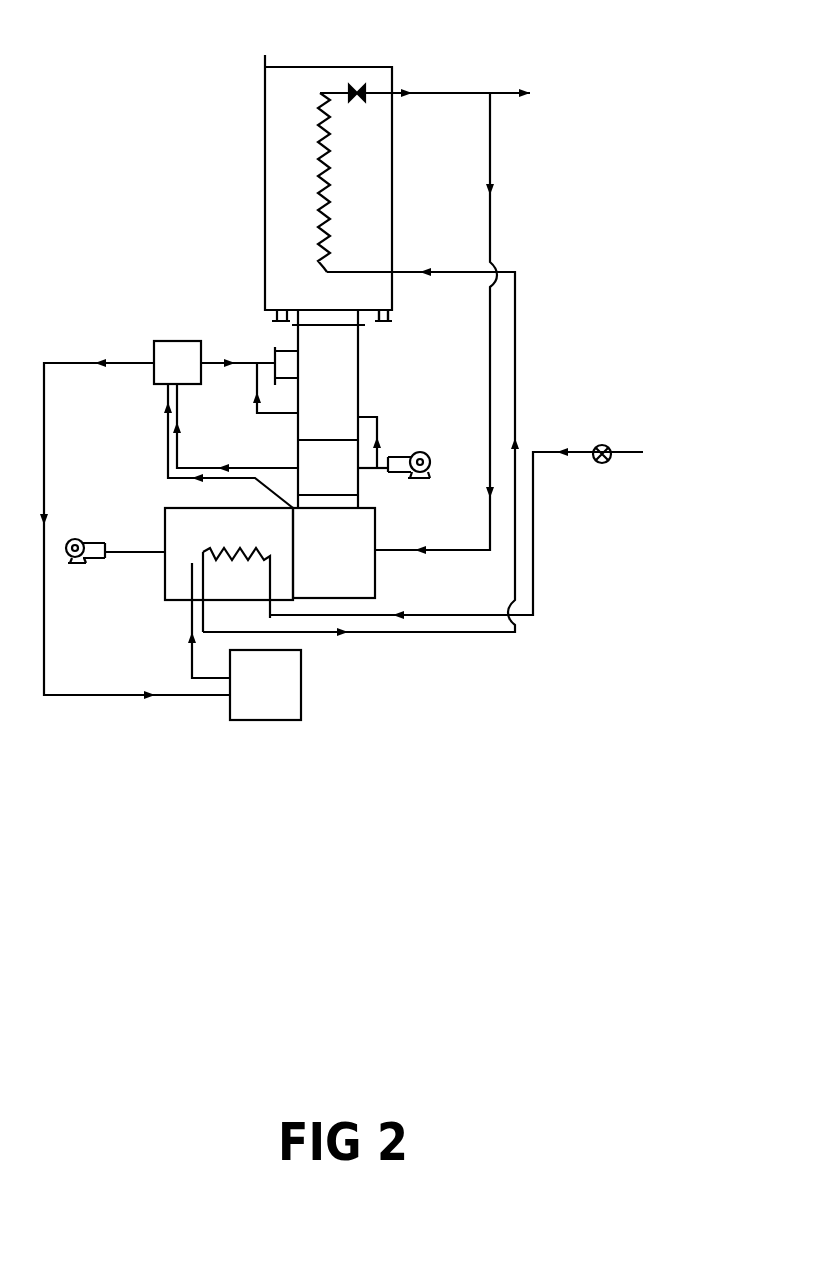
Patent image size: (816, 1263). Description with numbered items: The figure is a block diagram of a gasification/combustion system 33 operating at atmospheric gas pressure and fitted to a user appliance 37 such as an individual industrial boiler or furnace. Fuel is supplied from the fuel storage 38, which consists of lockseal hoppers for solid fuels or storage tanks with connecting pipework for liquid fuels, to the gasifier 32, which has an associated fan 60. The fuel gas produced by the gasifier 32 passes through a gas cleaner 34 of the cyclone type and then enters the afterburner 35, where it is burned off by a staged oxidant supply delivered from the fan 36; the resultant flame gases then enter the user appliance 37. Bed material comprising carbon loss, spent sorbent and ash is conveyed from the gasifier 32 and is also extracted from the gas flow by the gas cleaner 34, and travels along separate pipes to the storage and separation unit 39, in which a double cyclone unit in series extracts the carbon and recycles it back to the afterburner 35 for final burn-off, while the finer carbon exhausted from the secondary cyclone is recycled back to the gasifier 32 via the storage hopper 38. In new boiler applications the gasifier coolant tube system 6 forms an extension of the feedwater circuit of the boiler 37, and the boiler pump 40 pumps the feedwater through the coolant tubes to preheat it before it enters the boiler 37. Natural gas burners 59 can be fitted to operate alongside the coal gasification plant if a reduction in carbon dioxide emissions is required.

The user appliance 37 is at (297, 60).
The afterburner 35 is at (362, 365).
The natural gas burners 59 is at (394, 320).
The storage and separation unit 39 is at (161, 331).
The fan 36 is at (427, 441).
The boiler pump 40 is at (590, 427).
The gasifier 32 is at (156, 506).
The gasifier coolant tube system 6 is at (221, 538).
The gas cleaner 34 is at (367, 487).
The fan 60 is at (82, 577).
The fuel storage 38 is at (256, 729).
The gasification/combustion system 33 is at (306, 1039).